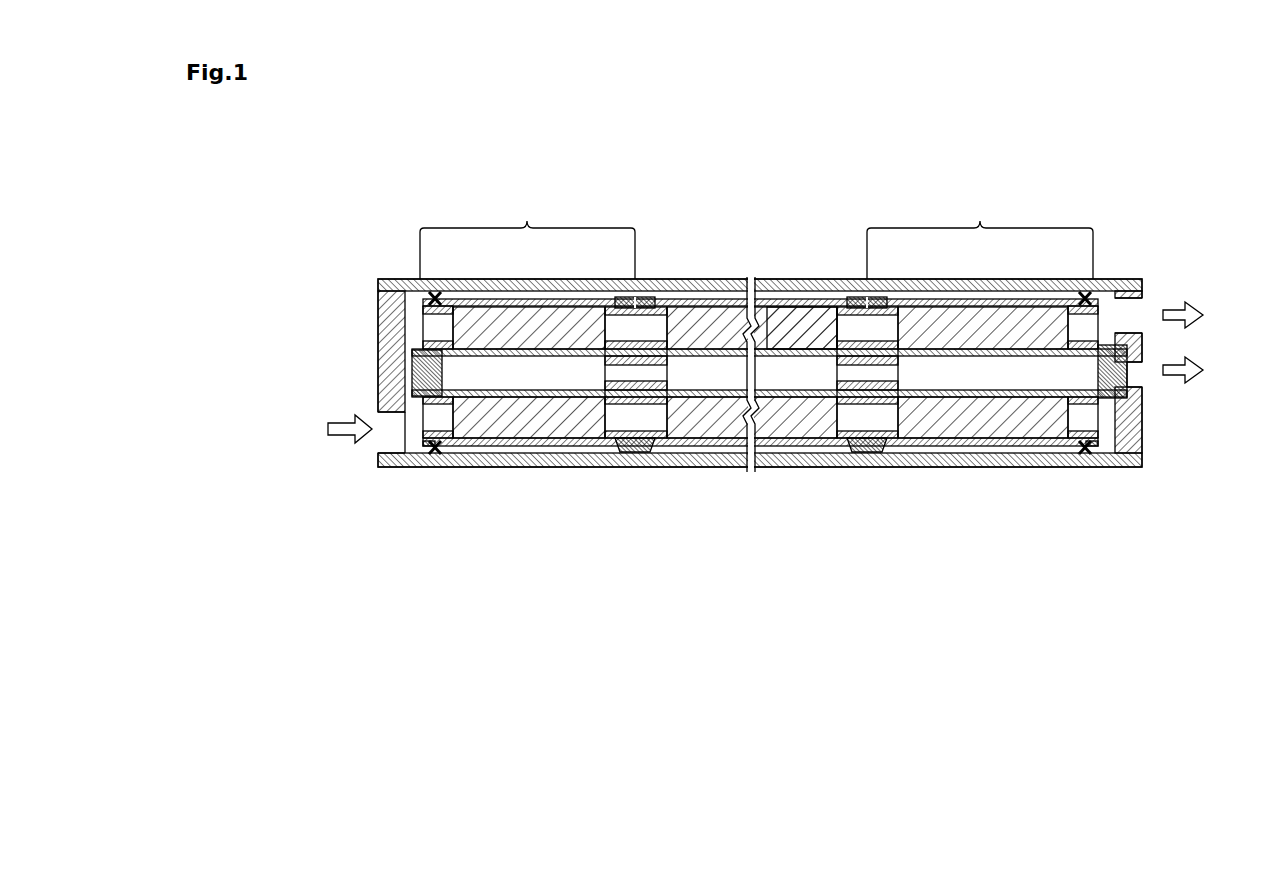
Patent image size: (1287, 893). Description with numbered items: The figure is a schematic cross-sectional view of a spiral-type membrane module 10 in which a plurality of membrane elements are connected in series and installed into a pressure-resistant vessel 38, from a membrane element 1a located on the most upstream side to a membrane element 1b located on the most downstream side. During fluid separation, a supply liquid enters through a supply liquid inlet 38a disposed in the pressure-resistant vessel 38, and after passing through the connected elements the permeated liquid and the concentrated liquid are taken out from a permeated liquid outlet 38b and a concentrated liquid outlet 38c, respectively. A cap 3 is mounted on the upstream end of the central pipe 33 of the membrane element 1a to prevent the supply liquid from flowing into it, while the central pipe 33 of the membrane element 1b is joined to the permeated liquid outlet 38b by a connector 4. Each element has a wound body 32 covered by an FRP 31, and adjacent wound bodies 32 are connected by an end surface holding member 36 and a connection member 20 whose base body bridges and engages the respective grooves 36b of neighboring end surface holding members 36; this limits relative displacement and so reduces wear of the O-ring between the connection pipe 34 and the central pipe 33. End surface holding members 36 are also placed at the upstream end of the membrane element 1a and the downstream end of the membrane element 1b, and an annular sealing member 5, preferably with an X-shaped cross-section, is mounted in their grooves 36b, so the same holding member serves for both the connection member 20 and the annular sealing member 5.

The spiral-type membrane module 10 is at (1046, 182).
The membrane element 1a is at (955, 207).
The membrane element 1b is at (980, 236).
The cap 3 is at (378, 366).
The connector 4 is at (1142, 402).
The annular sealing member 5 is at (435, 458).
The connection member 20 is at (638, 462).
The FRP 31 is at (774, 300).
The wound body 32 is at (556, 418).
The central pipe 33 is at (818, 337).
The connection pipe 34 is at (637, 352).
The end surface holding member 36 is at (455, 452).
The groove 36b is at (416, 452).
The pressure-resistant vessel 38 is at (797, 302).
The supply liquid inlet 38a is at (378, 450).
The permeated liquid outlet 38b is at (1142, 380).
The concentrated liquid outlet 38c is at (1142, 315).